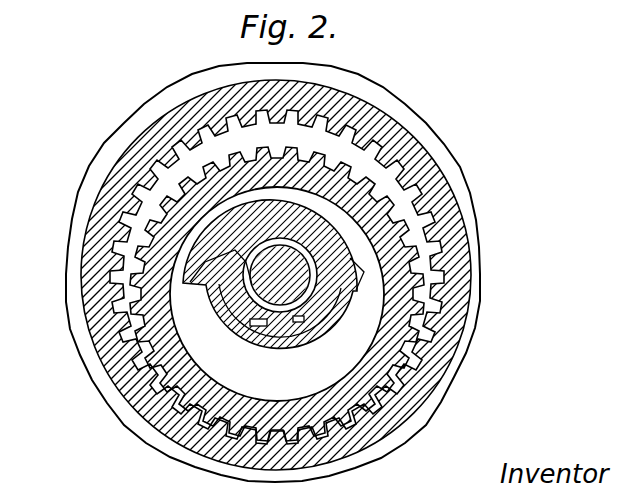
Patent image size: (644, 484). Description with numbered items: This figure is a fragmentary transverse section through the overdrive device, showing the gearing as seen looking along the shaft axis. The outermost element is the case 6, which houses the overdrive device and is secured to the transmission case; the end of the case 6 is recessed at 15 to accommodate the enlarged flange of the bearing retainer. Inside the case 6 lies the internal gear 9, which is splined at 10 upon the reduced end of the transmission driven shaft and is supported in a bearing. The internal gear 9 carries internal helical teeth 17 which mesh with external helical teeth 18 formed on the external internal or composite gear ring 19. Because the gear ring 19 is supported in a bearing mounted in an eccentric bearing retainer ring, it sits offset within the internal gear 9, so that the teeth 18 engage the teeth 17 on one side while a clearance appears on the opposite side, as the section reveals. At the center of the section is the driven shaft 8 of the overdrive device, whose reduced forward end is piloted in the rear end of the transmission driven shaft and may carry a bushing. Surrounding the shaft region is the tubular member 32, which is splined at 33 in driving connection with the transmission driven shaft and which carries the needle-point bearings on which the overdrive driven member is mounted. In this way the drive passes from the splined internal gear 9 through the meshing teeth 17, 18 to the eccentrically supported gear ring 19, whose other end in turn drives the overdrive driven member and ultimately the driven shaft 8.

The case 6 is at (73, 302).
The internal gear 9 is at (433, 168).
The external internal or composite gear ring 19 is at (400, 308).
The internal helical teeth 17 is at (322, 127).
The external helical teeth 18 is at (257, 160).
The tubular member 32 is at (317, 327).
The spline 33 is at (233, 300).
The spline 10 is at (226, 262).
The recess 15 is at (298, 317).
The driven shaft 8 is at (268, 295).